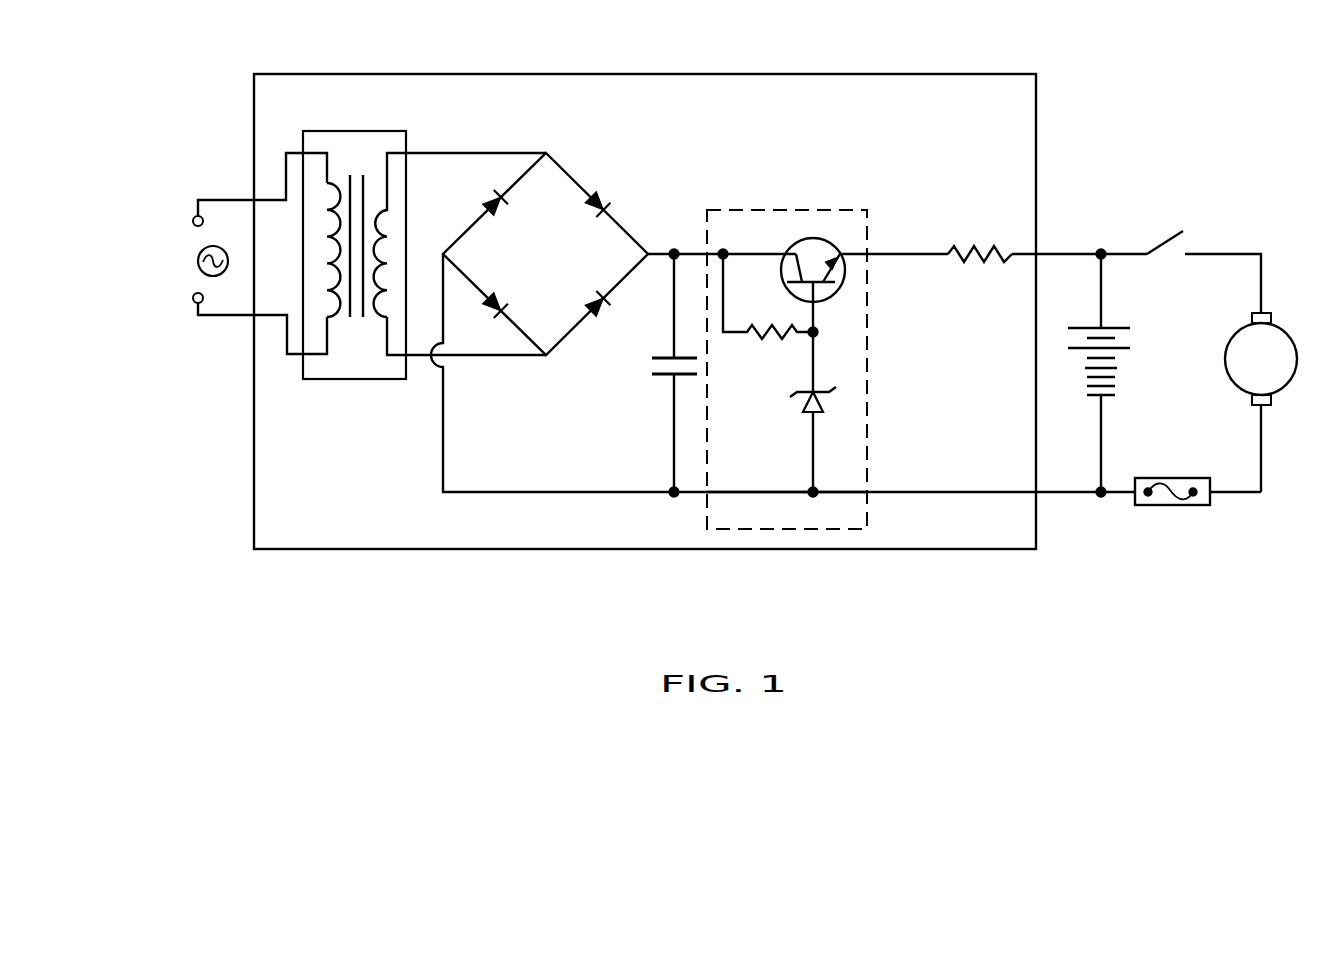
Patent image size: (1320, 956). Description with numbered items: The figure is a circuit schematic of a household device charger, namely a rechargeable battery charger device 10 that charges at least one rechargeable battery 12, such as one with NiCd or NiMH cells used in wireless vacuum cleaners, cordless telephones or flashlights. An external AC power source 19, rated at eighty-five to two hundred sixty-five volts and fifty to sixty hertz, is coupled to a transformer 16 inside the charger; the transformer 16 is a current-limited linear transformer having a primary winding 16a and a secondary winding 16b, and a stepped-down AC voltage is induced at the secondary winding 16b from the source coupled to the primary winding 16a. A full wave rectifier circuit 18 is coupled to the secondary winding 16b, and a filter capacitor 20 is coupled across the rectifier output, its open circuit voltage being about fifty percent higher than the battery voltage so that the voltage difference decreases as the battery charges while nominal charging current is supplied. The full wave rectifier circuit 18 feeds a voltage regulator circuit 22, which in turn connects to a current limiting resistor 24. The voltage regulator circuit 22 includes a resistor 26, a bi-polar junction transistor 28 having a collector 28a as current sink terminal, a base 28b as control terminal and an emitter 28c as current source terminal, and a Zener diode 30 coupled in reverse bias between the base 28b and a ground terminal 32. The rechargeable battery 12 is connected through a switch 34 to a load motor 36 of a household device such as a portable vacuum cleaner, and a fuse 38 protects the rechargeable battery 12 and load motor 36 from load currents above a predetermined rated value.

The rechargeable battery charger device 10 is at (645, 311).
The rechargeable battery 12 is at (1118, 326).
The transformer 16 is at (403, 233).
The primary winding 16a is at (327, 194).
The secondary winding 16b is at (383, 224).
The full wave rectifier circuit 18 is at (545, 254).
The AC power source 19 is at (173, 242).
The filter capacitor 20 is at (650, 363).
The voltage regulator circuit 22 is at (787, 369).
The current limiting resistor 24 is at (978, 262).
The resistor 26 is at (763, 307).
The bi-polar junction transistor 28 is at (833, 242).
The collector 28a is at (790, 252).
The base 28b is at (817, 303).
The emitter 28c is at (835, 250).
The Zener diode 30 is at (825, 405).
The ground terminal 32 is at (817, 488).
The switch 34 is at (1178, 234).
The load motor 36 is at (1226, 352).
The fuse 38 is at (1140, 477).